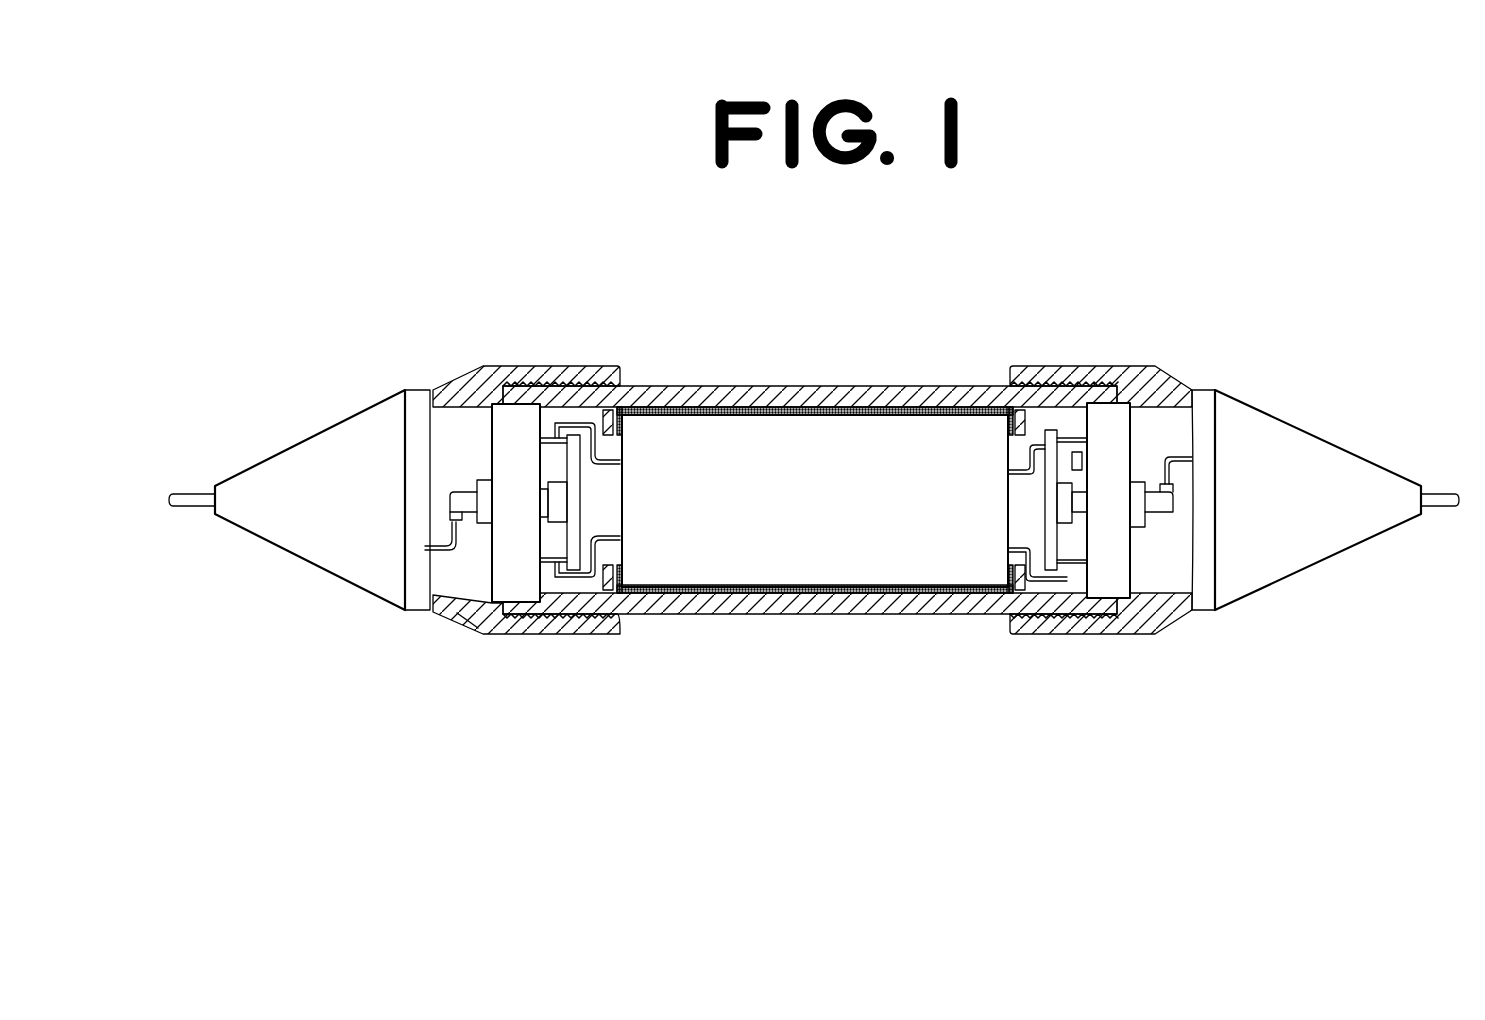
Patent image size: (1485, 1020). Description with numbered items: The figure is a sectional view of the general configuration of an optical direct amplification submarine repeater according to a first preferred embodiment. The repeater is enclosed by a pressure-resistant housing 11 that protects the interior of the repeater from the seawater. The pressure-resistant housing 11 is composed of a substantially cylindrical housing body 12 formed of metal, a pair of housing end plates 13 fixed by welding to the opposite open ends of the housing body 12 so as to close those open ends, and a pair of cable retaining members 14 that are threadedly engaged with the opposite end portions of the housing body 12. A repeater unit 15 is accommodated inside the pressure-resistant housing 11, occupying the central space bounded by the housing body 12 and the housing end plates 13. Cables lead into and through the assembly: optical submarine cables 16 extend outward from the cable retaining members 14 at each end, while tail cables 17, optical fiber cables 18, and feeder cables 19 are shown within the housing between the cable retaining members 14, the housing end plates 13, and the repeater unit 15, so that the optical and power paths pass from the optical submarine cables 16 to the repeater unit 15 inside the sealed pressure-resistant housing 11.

The pressure-resistant housing 11 is at (733, 387).
The housing body 12 is at (860, 400).
The housing end plate 13 is at (520, 577).
The cable retaining member 14 is at (345, 432).
The repeater unit 15 is at (826, 547).
The optical submarine cable 16 is at (197, 488).
The tail cable 17 is at (452, 595).
The optical fiber cable 18 is at (1040, 418).
The feeder cable 19 is at (594, 405).